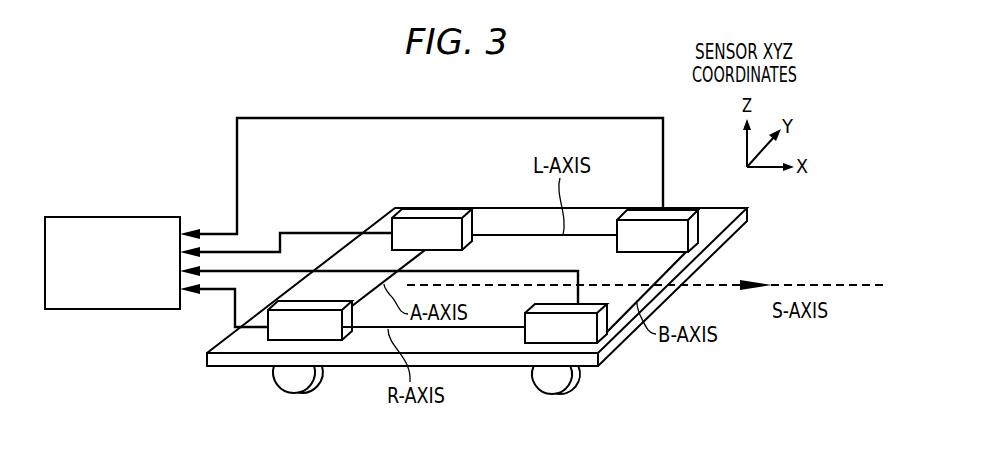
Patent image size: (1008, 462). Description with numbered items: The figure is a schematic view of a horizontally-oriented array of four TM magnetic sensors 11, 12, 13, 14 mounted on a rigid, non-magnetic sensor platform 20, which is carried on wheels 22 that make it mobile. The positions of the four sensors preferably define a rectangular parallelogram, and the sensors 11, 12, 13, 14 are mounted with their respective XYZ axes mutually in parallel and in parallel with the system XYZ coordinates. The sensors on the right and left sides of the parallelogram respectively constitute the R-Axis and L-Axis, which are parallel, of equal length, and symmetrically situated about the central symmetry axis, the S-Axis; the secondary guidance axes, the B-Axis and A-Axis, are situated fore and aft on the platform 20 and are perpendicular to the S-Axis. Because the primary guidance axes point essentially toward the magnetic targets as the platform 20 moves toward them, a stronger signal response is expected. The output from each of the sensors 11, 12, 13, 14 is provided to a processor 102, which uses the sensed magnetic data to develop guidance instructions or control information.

The processor 102 is at (110, 217).
The sensor 11 is at (683, 213).
The sensor 12 is at (525, 320).
The sensor 13 is at (285, 312).
The sensor 14 is at (440, 209).
The platform 20 is at (228, 366).
The wheels 22 is at (293, 394).